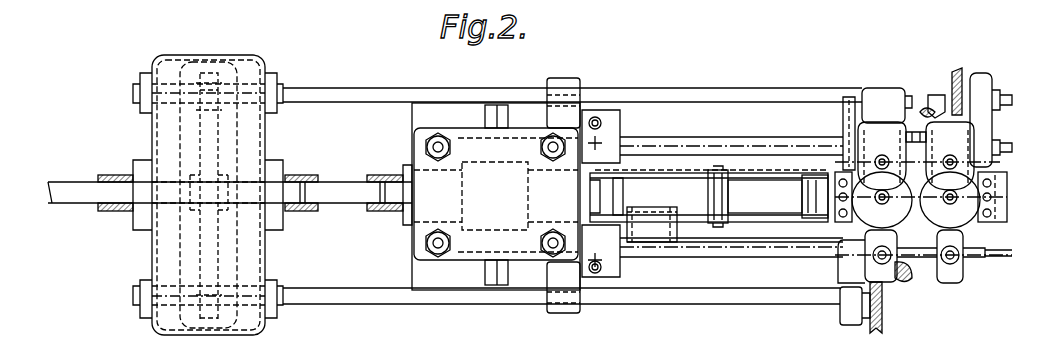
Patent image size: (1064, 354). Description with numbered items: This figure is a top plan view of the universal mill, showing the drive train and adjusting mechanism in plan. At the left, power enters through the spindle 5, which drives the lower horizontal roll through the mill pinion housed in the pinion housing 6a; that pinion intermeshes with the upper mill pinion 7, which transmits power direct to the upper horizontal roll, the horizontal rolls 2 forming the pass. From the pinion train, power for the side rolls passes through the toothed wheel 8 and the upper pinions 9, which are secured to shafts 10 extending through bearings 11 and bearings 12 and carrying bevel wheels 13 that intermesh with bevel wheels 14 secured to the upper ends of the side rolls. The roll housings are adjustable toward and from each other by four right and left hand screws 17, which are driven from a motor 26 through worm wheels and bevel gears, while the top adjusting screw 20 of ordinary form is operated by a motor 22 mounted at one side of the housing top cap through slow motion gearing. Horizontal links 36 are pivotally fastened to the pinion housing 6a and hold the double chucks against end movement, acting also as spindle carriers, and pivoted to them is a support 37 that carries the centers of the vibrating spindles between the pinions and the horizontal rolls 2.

The horizontal rolls 2 is at (915, 214).
The spindle 5 is at (80, 200).
The pinion housing 6a is at (495, 181).
The upper mill pinion 7 is at (504, 218).
The toothed wheel 8 is at (210, 248).
The upper pinions 9 is at (209, 62).
The shafts 10 is at (359, 93).
The bearings 11 is at (568, 77).
The bearings 12 is at (982, 80).
The bevel wheels 13 is at (957, 72).
The bevel wheels 14 is at (934, 108).
The right and left hand screws 17 is at (793, 150).
The top adjusting screw 20 is at (1007, 194).
The motor 22 is at (884, 93).
The motor 26 is at (660, 240).
The horizontal links 36 is at (780, 175).
The support 37 is at (707, 198).